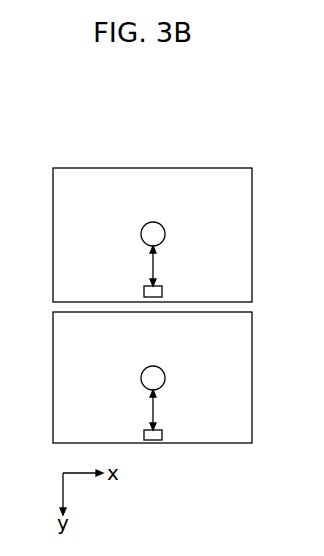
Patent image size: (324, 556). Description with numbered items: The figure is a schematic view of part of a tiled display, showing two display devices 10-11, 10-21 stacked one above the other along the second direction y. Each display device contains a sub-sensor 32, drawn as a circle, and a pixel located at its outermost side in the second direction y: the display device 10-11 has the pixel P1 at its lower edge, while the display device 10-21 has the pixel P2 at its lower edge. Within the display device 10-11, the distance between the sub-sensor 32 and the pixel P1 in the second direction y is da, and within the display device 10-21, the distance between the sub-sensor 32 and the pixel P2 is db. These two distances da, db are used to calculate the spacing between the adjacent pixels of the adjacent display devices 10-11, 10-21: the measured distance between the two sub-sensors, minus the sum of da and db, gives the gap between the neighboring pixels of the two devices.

The display device 10-11 is at (152, 235).
The display device 10-21 is at (152, 377).
The sub-sensor 32 is at (141, 236).
The pixel P1 is at (162, 289).
The pixel P2 is at (162, 434).
The distance da is at (142, 266).
The distance db is at (142, 410).